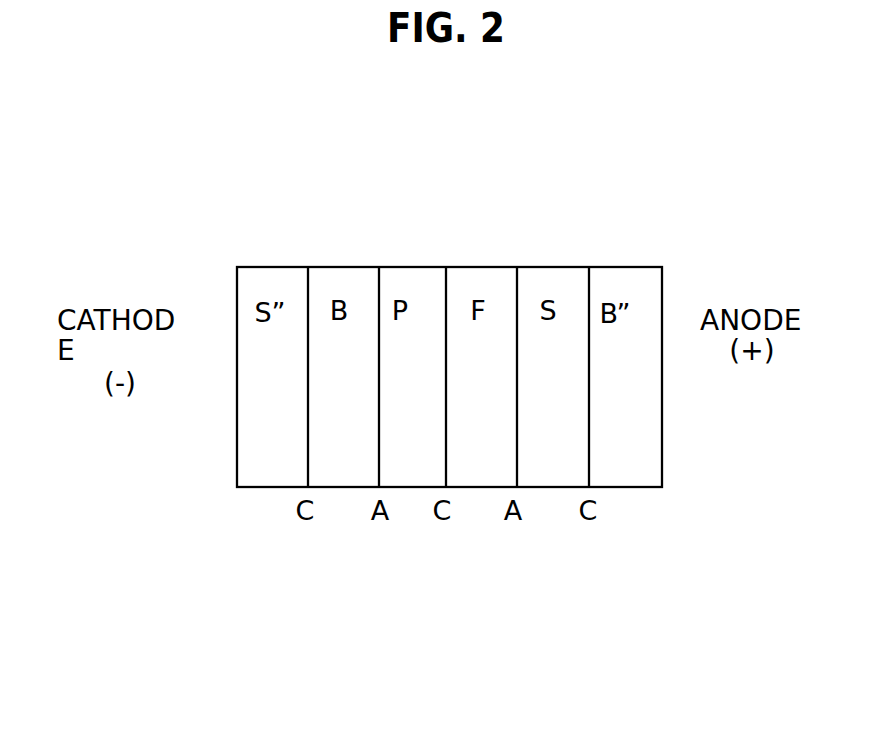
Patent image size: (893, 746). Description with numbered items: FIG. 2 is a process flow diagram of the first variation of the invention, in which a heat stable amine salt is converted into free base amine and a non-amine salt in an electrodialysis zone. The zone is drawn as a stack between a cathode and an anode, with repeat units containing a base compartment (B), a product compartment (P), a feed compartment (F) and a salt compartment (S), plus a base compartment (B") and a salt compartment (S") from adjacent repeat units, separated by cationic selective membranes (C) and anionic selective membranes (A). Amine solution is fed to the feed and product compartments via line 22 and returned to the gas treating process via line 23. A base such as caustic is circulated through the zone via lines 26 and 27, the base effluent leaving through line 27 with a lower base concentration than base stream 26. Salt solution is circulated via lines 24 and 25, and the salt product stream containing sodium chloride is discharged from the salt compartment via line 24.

The line 22 is at (415, 240).
The line 23 is at (410, 487).
The line 24 is at (643, 540).
The line 25 is at (629, 218).
The line 26 is at (282, 219).
The line 27 is at (277, 539).